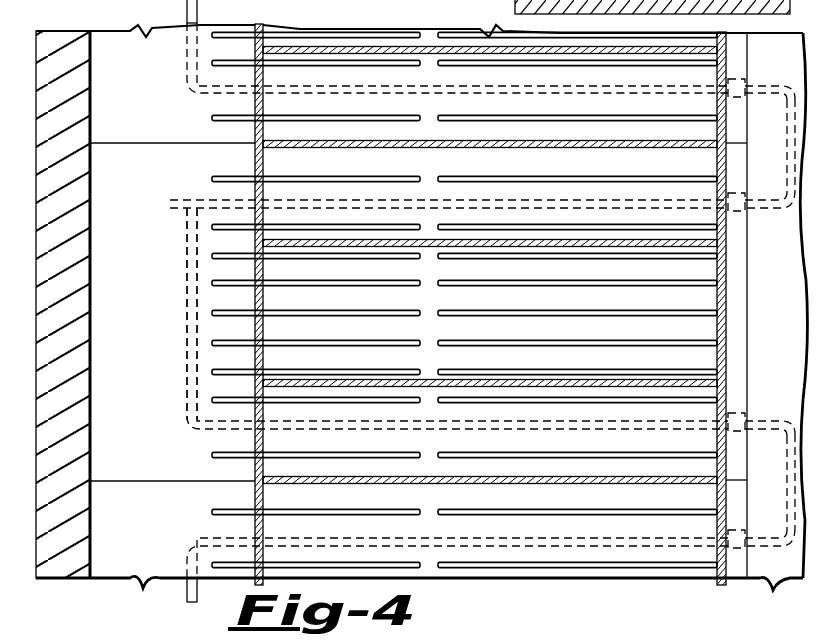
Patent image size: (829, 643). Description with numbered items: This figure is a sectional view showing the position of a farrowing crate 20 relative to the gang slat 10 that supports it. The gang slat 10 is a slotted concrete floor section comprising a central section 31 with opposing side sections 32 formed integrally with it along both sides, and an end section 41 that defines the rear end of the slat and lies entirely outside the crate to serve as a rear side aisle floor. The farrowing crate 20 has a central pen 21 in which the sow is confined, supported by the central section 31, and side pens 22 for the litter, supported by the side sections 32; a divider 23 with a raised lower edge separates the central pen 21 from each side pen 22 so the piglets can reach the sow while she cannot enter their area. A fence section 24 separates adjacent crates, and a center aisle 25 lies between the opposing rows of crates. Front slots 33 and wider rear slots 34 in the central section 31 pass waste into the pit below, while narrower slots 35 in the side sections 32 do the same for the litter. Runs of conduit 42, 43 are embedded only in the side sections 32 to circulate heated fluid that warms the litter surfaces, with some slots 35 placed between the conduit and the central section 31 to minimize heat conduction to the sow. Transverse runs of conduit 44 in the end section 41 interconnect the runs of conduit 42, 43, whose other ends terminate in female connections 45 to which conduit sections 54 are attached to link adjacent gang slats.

The gang slat 10 is at (668, 330).
The farrowing crate 20 is at (240, 161).
The central pen 21 is at (708, 306).
The side pens 22 is at (272, 104).
The divider 23 is at (320, 48).
The fence section 24 is at (545, 148).
The center aisle 25 is at (796, 368).
The central section 31 is at (506, 315).
The side sections 32 is at (405, 173).
The front slots 33 is at (708, 262).
The rear slots 34 is at (212, 312).
The side section slots 35 is at (214, 183).
The end section 41 is at (146, 86).
The run of conduit 42 is at (520, 4).
The run of conduit 43 is at (535, 207).
The transverse runs of conduit 44 is at (188, 375).
The female connections 45 is at (750, 80).
The conduit sections 54 is at (787, 146).